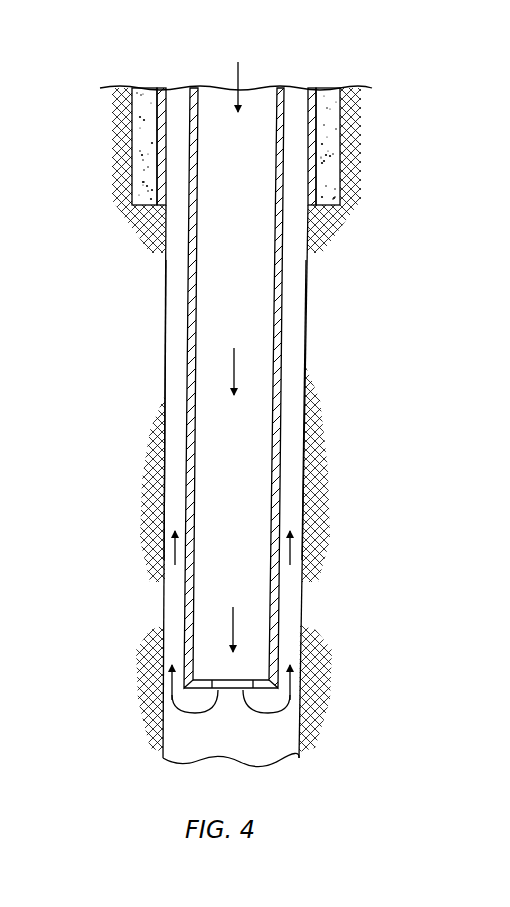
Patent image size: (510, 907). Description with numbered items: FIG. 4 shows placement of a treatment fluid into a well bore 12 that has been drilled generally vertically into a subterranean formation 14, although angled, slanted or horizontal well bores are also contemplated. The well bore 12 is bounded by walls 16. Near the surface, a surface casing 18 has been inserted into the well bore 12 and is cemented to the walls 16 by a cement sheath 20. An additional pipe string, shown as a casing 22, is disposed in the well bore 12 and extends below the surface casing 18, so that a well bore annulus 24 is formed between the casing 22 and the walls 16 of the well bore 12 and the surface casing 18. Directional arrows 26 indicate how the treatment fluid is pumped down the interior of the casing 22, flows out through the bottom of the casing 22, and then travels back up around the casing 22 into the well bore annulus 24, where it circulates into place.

The well bore 12 is at (302, 577).
The subterranean formation 14 is at (135, 463).
The walls 16 is at (340, 120).
The surface casing 18 is at (316, 178).
The cement sheath 20 is at (330, 150).
The casing 22 is at (187, 330).
The well bore annulus 24 is at (178, 398).
The directional arrows 26 is at (238, 73).